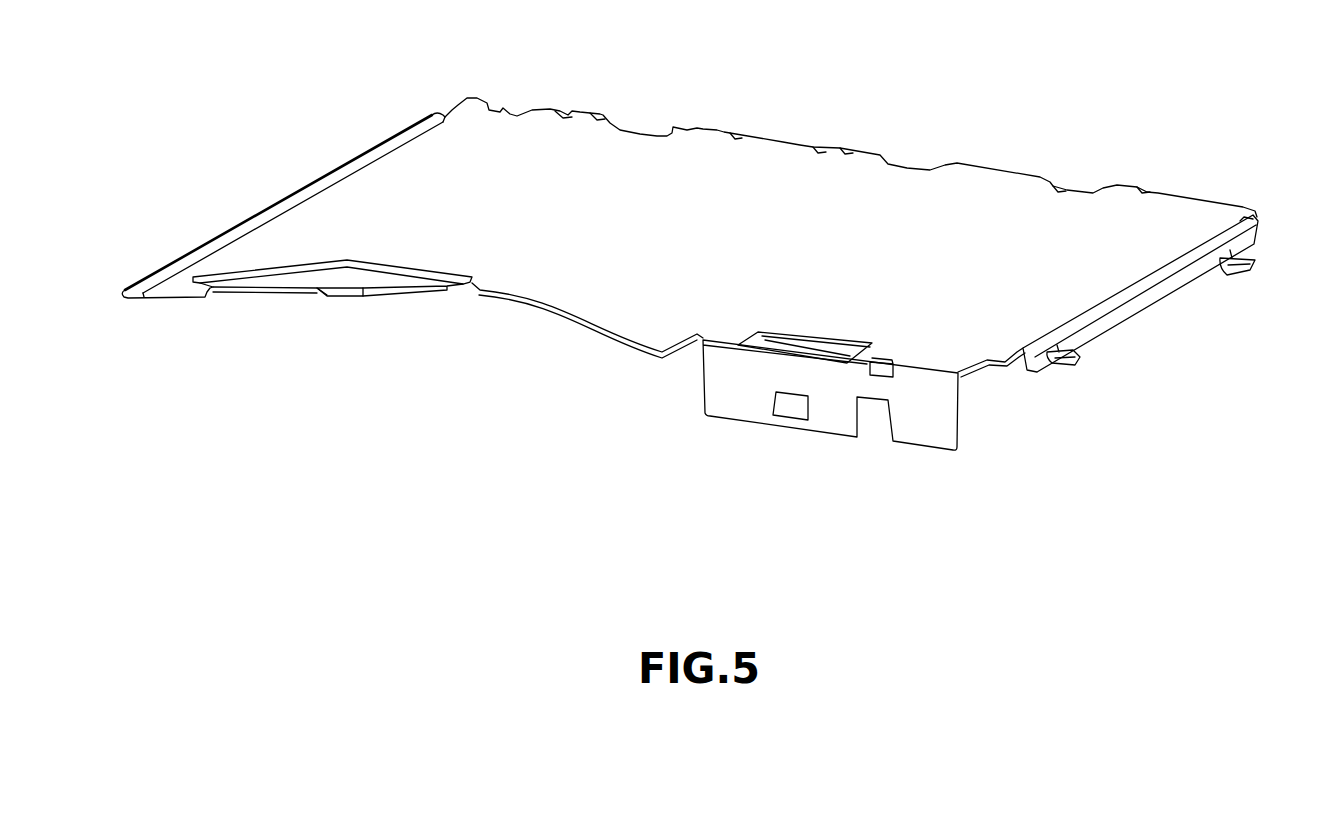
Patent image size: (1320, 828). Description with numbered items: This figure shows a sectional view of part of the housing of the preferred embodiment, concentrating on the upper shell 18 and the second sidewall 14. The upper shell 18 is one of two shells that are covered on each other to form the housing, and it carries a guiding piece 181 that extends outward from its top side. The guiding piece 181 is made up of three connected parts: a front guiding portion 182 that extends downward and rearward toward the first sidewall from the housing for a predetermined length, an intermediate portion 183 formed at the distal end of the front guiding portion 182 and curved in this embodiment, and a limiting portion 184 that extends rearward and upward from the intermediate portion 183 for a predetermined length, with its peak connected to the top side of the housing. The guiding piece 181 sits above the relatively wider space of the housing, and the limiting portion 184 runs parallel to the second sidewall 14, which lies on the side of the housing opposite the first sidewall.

The upper shell 18 is at (995, 212).
The guiding piece 181 is at (331, 336).
The front guiding portion 182 is at (245, 295).
The intermediate portion 183 is at (335, 293).
The limiting portion 184 is at (425, 295).
The second sidewall 14 is at (846, 435).